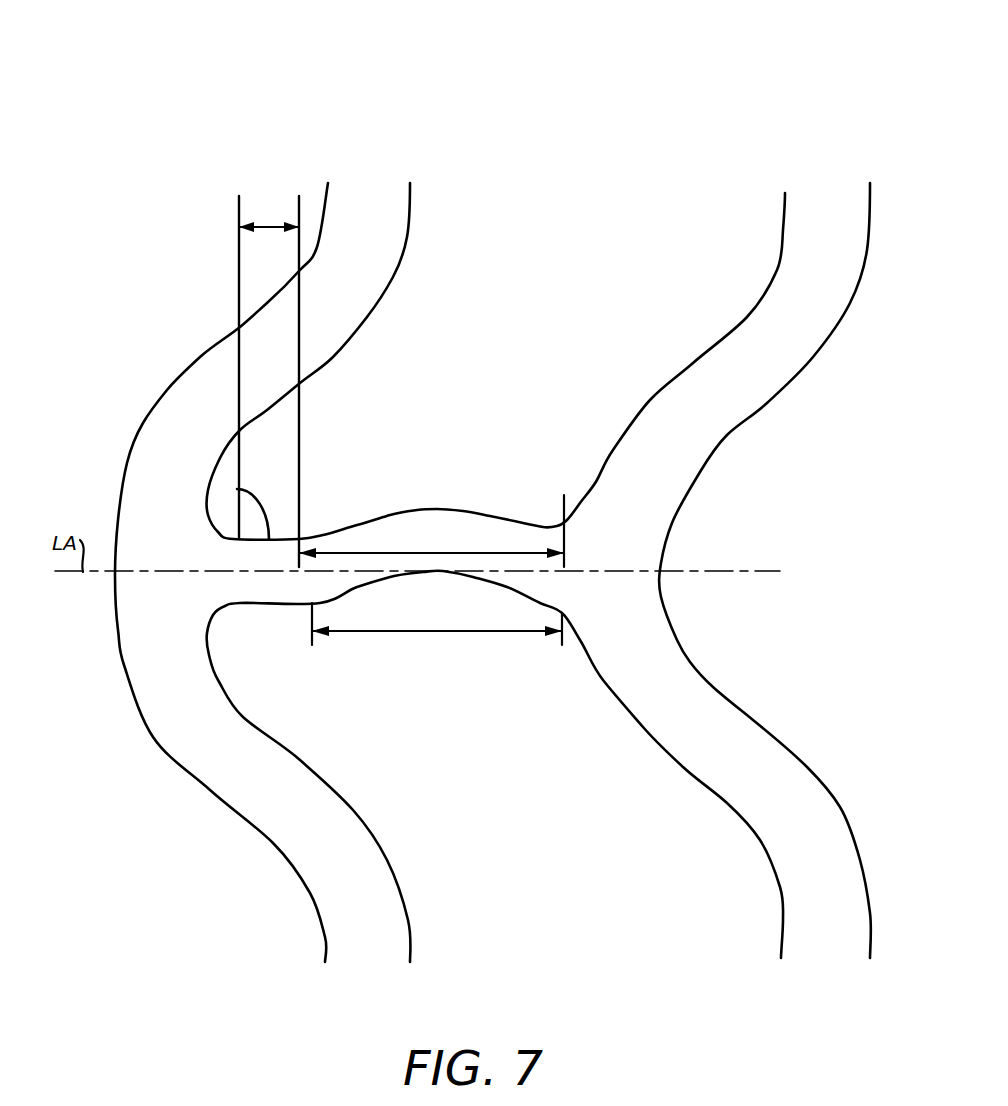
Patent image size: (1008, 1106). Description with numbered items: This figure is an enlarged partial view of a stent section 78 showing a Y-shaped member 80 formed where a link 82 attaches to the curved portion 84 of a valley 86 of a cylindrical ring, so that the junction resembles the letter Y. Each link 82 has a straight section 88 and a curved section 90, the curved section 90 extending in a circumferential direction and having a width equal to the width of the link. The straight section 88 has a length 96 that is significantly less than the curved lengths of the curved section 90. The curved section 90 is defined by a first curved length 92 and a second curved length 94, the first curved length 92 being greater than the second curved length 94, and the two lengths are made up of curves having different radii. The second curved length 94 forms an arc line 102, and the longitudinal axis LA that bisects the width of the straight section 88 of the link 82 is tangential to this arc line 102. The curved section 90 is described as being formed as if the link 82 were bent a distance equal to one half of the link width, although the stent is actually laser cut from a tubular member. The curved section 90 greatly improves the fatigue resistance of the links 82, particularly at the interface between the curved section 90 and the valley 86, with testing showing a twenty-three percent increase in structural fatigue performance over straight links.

The stent section 78 is at (578, 153).
The Y-shaped member 80 is at (762, 548).
The link 82 is at (475, 422).
The curved portion 84 is at (650, 400).
The valley 86 is at (661, 566).
The straight section 88 is at (237, 489).
The curved section 90 is at (415, 509).
The first curved length 92 is at (480, 553).
The second curved length 94 is at (472, 633).
The length 96 is at (272, 227).
The arc line 102 is at (490, 580).